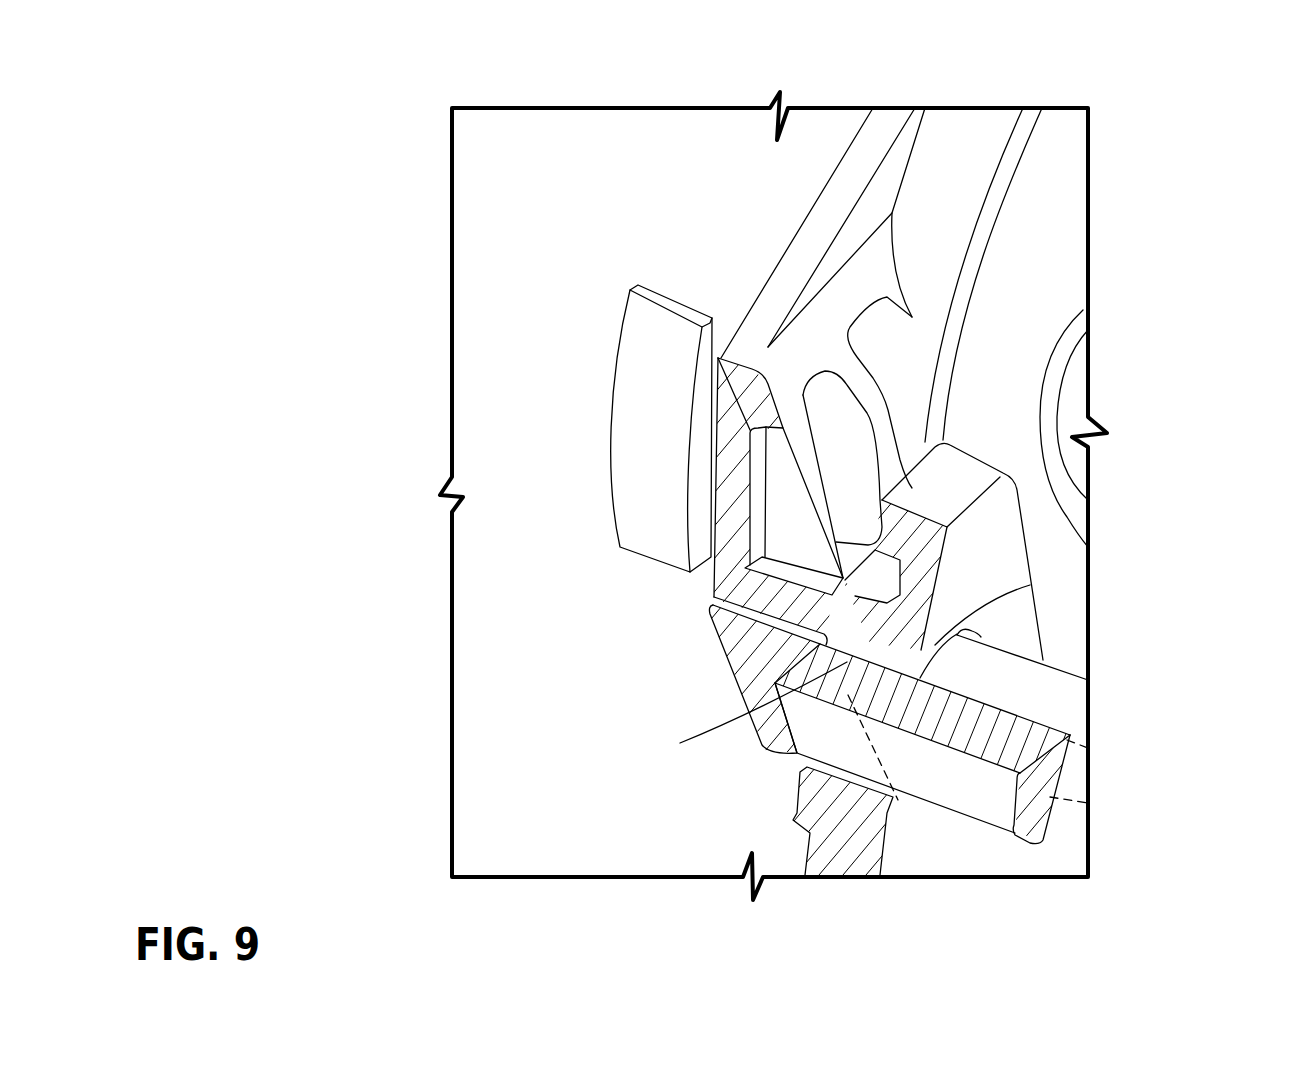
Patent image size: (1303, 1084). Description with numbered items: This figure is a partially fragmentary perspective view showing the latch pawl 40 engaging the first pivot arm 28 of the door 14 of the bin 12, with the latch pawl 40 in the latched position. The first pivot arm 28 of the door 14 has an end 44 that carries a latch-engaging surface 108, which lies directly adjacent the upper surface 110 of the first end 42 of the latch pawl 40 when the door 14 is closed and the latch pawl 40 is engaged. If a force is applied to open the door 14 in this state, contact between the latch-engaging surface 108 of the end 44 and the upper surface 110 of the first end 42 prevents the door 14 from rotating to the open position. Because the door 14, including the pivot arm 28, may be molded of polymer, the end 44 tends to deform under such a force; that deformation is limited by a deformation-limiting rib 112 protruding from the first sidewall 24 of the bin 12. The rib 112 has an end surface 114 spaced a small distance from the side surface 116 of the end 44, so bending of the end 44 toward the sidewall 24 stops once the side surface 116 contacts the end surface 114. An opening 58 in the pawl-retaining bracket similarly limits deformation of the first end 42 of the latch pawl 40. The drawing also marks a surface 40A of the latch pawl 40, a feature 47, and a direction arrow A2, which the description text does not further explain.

The bin 12 is at (517, 230).
The door 14 is at (962, 147).
The first sidewall 24 is at (515, 455).
The first pivot arm 28 is at (826, 187).
The latch pawl 40 is at (1068, 661).
The retention bar surface 40A is at (926, 783).
The first end 42 is at (760, 710).
The end 44 is at (787, 260).
The boss 47 is at (998, 570).
The opening 58 is at (973, 630).
The latch-engaging surface 108 is at (707, 623).
The upper surface 110 is at (810, 652).
The deformation-limiting rib 112 is at (653, 372).
The end surface 114 is at (705, 467).
The side surface 116 is at (733, 328).
The direction arrow A2 is at (1250, 768).